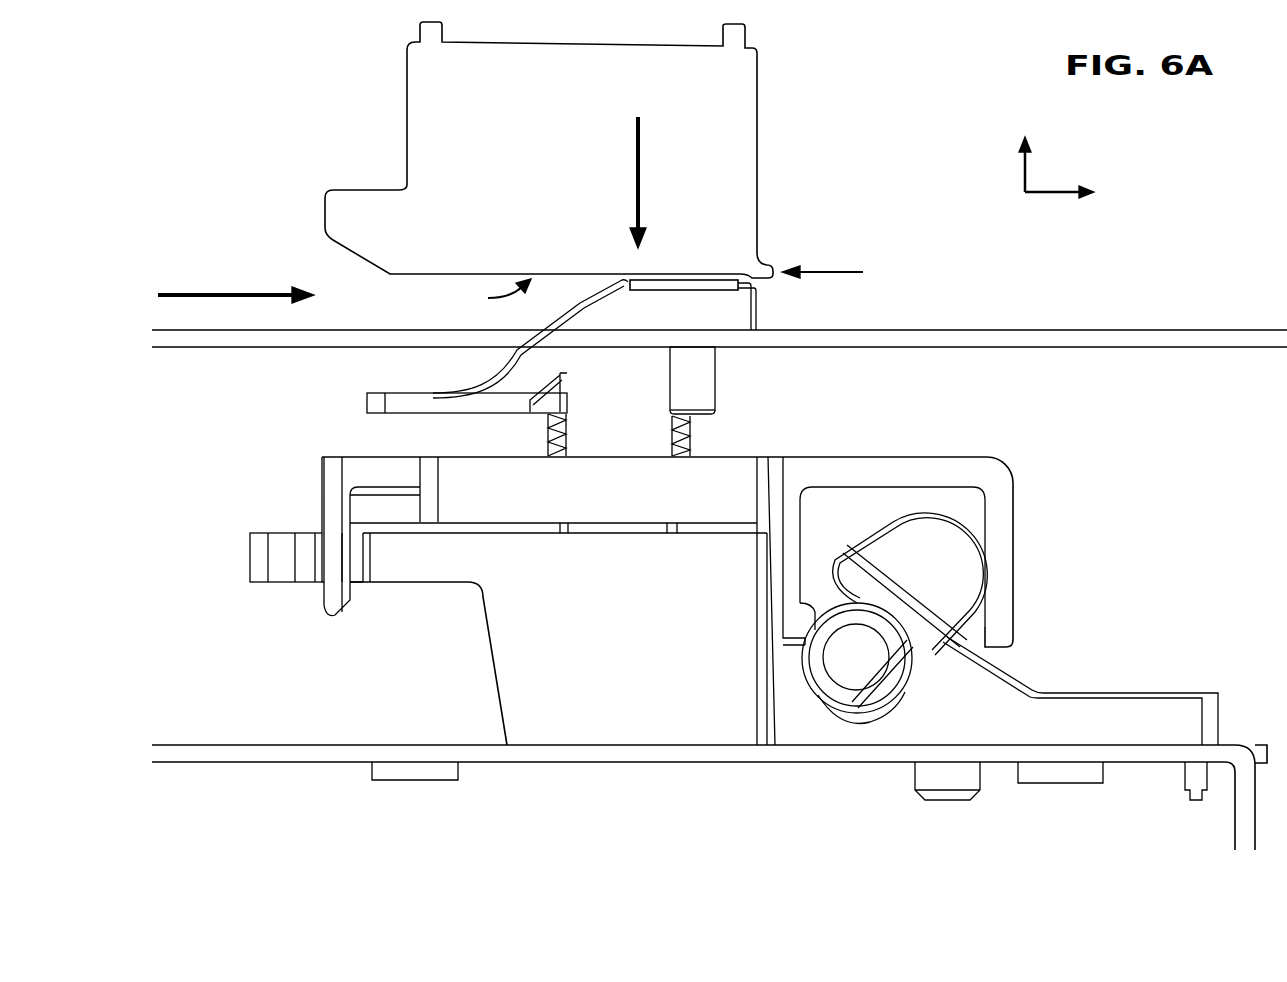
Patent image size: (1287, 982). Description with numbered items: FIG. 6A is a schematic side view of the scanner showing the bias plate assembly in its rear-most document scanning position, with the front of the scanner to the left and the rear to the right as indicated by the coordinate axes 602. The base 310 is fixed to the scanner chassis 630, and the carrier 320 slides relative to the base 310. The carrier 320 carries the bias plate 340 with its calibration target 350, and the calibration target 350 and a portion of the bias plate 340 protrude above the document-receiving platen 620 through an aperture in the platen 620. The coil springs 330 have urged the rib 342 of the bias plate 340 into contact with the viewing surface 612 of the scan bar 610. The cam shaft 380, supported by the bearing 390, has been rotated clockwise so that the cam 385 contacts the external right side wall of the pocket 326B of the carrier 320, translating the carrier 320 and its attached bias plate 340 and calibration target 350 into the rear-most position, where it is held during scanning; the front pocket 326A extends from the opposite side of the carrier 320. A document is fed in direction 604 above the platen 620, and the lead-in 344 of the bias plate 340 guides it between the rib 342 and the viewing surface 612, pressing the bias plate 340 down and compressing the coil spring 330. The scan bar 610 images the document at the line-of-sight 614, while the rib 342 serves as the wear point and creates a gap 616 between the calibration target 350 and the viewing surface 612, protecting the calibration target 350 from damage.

The base 310 is at (500, 685).
The carrier 320 is at (738, 456).
The cam engagement pocket 326A is at (368, 507).
The cam engagement pocket 326B is at (893, 505).
The coil spring 330 is at (686, 448).
The bias plate 340 is at (368, 402).
The rib 342 is at (613, 283).
The lead-in 344 is at (515, 365).
The calibration target 350 is at (712, 287).
The cam shaft 380 is at (858, 707).
The cam 385 is at (942, 527).
The bearing 390 is at (1078, 692).
The coordinate axes 602 is at (1025, 185).
The document feed direction 604 is at (266, 291).
The scan bar 610 is at (401, 163).
The viewing surface 612 is at (485, 296).
The line-of-sight 614 is at (636, 170).
The gap 616 is at (845, 277).
The document-receiving platen 620 is at (1150, 328).
The scanner chassis 630 is at (268, 745).